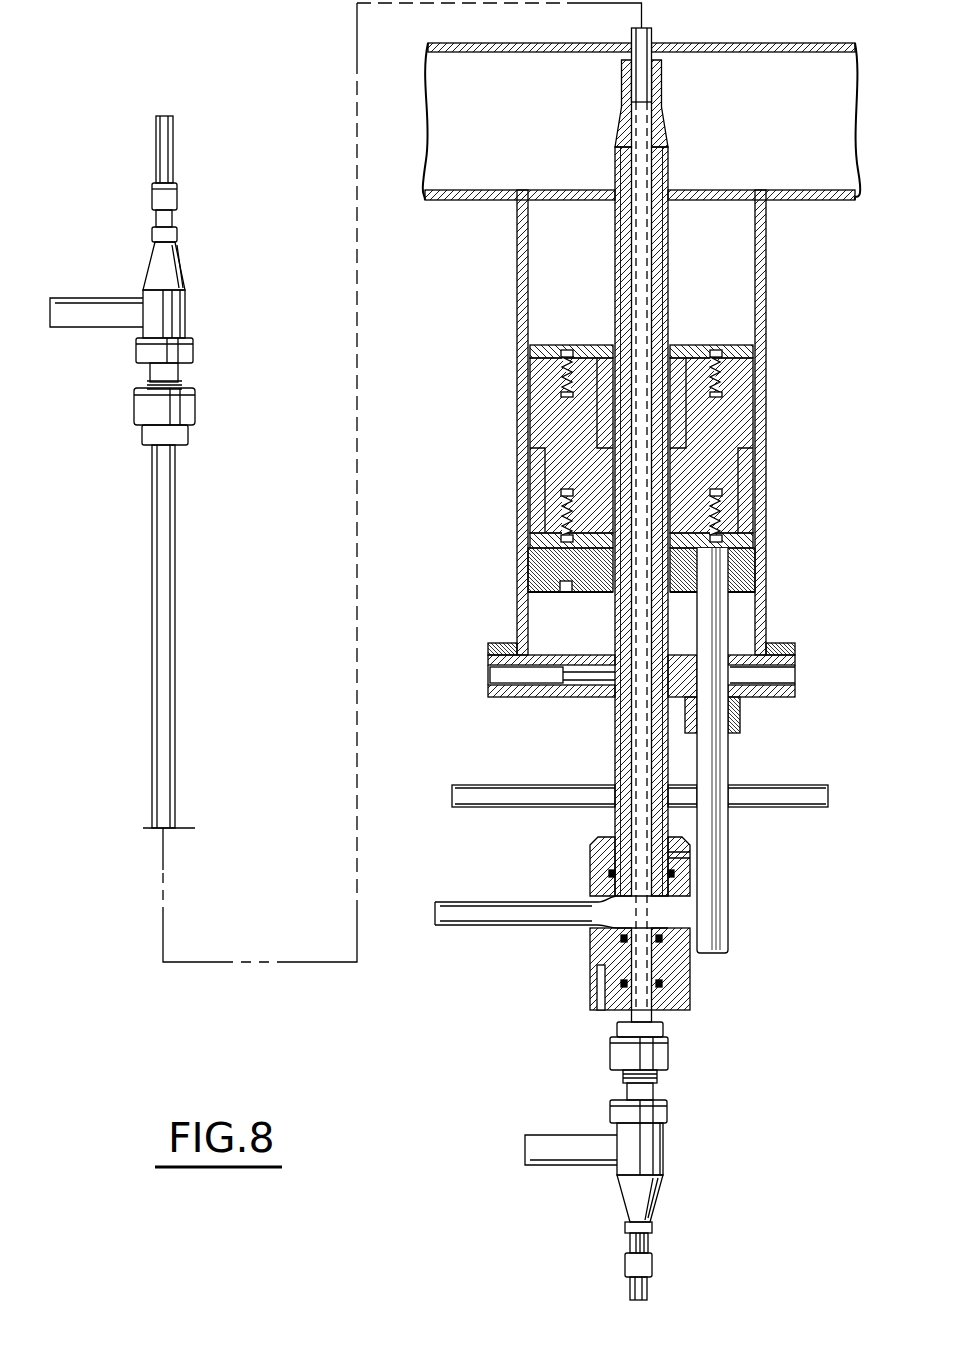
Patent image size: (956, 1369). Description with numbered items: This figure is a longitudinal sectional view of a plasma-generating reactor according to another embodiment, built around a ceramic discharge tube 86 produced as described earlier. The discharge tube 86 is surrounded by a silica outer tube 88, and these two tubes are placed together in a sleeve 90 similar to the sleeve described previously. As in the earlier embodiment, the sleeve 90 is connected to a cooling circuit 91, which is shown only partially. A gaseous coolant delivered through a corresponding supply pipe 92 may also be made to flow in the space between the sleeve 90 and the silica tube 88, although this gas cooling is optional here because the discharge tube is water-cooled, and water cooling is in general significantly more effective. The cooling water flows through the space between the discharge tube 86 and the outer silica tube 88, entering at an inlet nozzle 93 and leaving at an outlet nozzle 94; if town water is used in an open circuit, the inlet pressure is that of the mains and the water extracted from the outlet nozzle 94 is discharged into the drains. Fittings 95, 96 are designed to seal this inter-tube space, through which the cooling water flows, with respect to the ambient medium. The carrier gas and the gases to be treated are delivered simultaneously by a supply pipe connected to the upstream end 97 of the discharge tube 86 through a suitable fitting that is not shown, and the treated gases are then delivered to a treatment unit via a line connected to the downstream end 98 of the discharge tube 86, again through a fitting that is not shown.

The discharge tube 86 is at (648, 310).
The silica outer tube 88 is at (657, 217).
The sleeve 90 is at (658, 200).
The cooling circuit 91 is at (469, 786).
The supply pipe 92 is at (456, 903).
The inlet nozzle 93 is at (588, 1145).
The outlet nozzle 94 is at (115, 316).
The fitting 95 is at (635, 1188).
The fitting 96 is at (168, 275).
The upstream end 97 is at (648, 1296).
The downstream end 98 is at (175, 143).